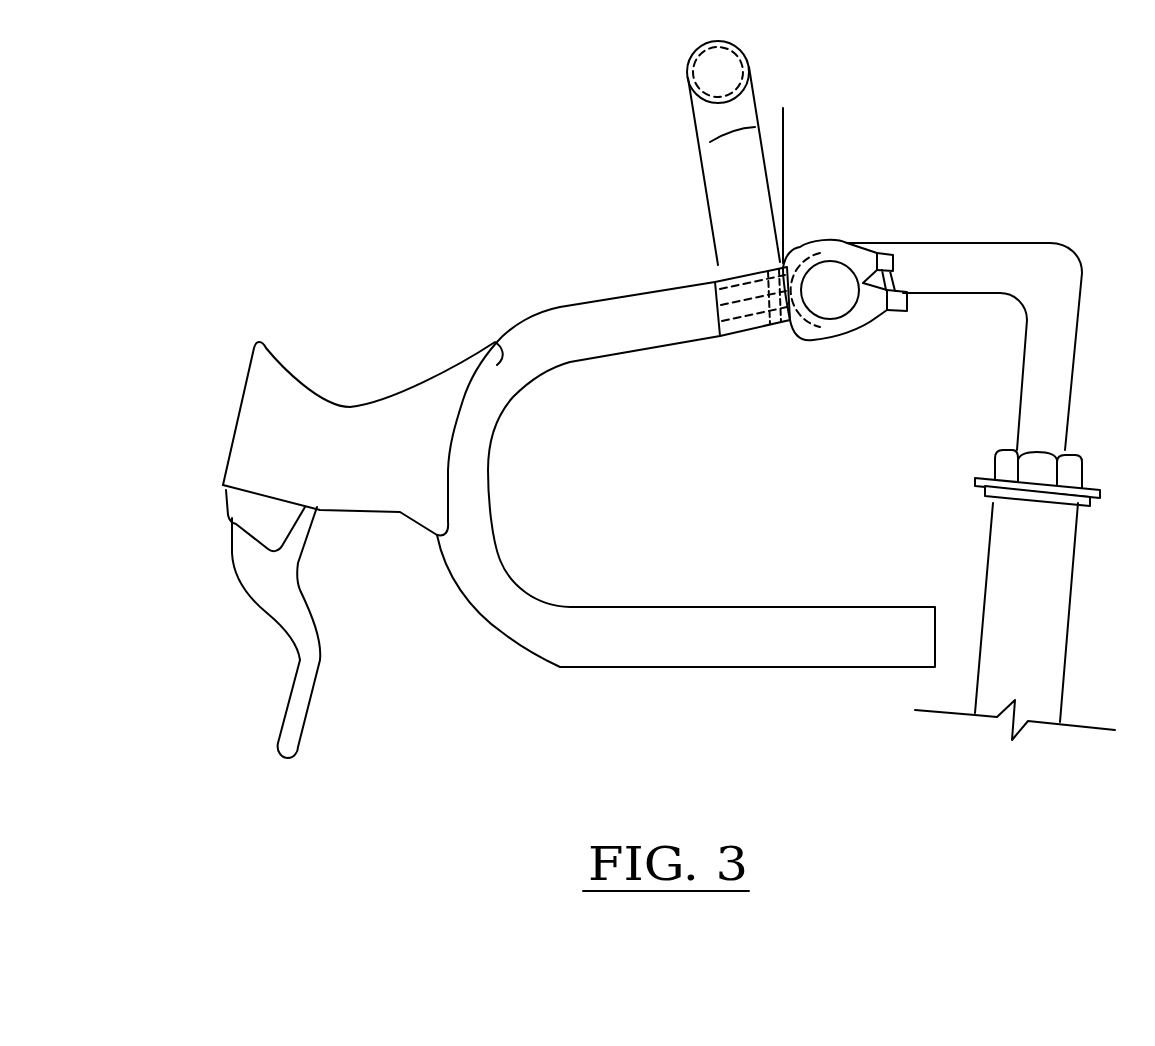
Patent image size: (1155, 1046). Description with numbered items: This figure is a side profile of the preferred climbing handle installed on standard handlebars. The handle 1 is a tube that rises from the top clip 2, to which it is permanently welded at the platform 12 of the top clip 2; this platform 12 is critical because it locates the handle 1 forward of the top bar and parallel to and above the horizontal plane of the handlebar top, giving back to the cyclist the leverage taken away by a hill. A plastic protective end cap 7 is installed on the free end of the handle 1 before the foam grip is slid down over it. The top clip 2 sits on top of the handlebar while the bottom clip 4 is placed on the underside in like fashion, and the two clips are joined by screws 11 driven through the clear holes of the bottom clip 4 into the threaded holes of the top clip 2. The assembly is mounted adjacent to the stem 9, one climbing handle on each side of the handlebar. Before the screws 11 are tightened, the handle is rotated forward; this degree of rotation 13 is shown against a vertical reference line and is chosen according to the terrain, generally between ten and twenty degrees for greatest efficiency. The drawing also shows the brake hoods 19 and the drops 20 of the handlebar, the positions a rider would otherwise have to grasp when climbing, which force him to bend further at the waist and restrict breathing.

The handle 1 is at (692, 103).
The top clip 2 is at (790, 262).
The bottom clip 4 is at (817, 342).
The plastic protective end cap 7 is at (732, 42).
The stem 9 is at (1076, 355).
The screws 11 is at (772, 320).
The platform 12 is at (736, 272).
The degree of rotation 13 is at (783, 124).
The hoods 19 is at (353, 405).
The drops 20 is at (668, 667).